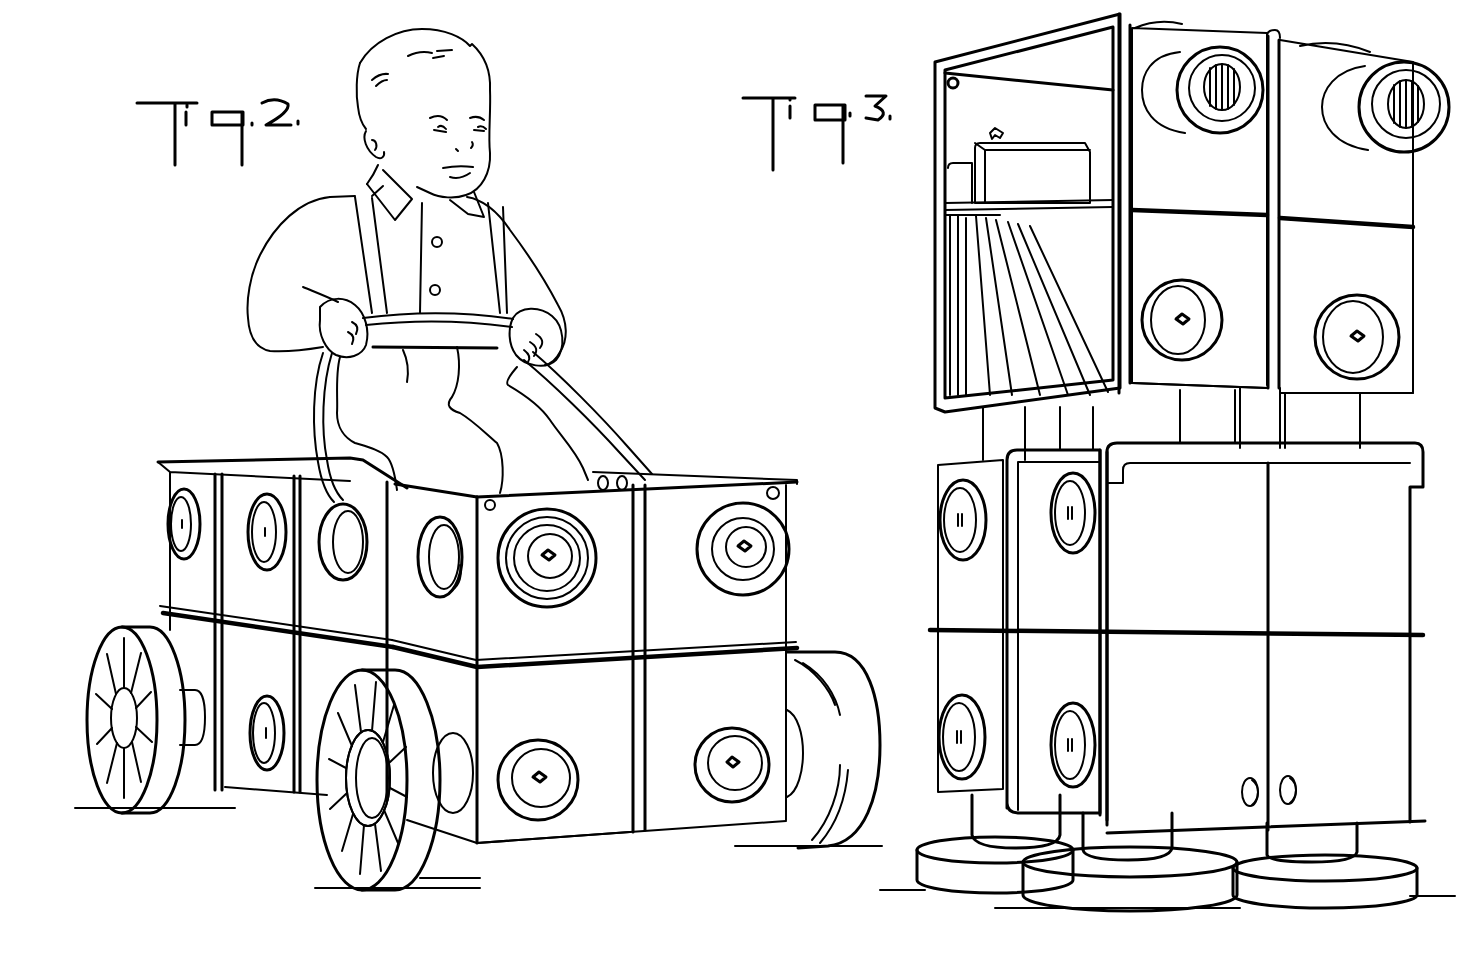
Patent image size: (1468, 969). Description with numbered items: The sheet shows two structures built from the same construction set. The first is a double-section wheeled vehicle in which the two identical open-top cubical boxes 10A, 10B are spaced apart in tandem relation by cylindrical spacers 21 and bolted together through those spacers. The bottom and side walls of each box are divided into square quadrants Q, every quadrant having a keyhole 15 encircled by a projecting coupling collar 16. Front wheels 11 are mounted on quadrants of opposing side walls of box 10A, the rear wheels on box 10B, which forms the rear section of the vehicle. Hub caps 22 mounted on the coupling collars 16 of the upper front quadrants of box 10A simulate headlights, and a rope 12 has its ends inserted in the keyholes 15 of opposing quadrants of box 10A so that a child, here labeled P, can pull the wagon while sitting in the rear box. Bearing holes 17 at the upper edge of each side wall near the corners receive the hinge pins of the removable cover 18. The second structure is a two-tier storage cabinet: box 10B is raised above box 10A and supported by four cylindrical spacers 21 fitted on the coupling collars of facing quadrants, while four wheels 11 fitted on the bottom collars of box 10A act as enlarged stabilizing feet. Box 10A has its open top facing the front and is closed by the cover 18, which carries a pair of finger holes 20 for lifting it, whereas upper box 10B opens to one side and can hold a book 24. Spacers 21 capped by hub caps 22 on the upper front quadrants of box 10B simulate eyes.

In FIG. 2, the child P is at (548, 236).
In FIG. 2, the square quadrant Q is at (590, 714).
In FIG. 3, the square quadrant Q is at (1225, 192).
In FIG. 2, the open-top cubical box 10A is at (800, 588).
In FIG. 3, the open-top cubical box 10A is at (953, 610).
In FIG. 2, the open-top cubical box 10B is at (152, 468).
In FIG. 3, the open-top cubical box 10B is at (1410, 340).
In FIG. 2, the wheel 11 is at (361, 874).
In FIG. 3, the wheel 11 is at (1278, 898).
In FIG. 2, the rope 12 is at (604, 428).
In FIG. 2, the keyhole 15 is at (440, 556).
In FIG. 2, the coupling collar 16 is at (452, 590).
In FIG. 3, the coupling collar 16 is at (1207, 292).
In FIG. 2, the bearing hole 17 is at (790, 494).
In FIG. 3, the removable cover 18 is at (1400, 571).
In FIG. 3, the finger hole 20 is at (1296, 780).
In FIG. 2, the cylindrical spacer 21 is at (316, 742).
In FIG. 3, the cylindrical spacer 21 is at (1170, 127).
In FIG. 2, the hub cap 22 is at (552, 606).
In FIG. 3, the hub cap 22 is at (1418, 146).
In FIG. 3, the book 24 is at (1045, 160).